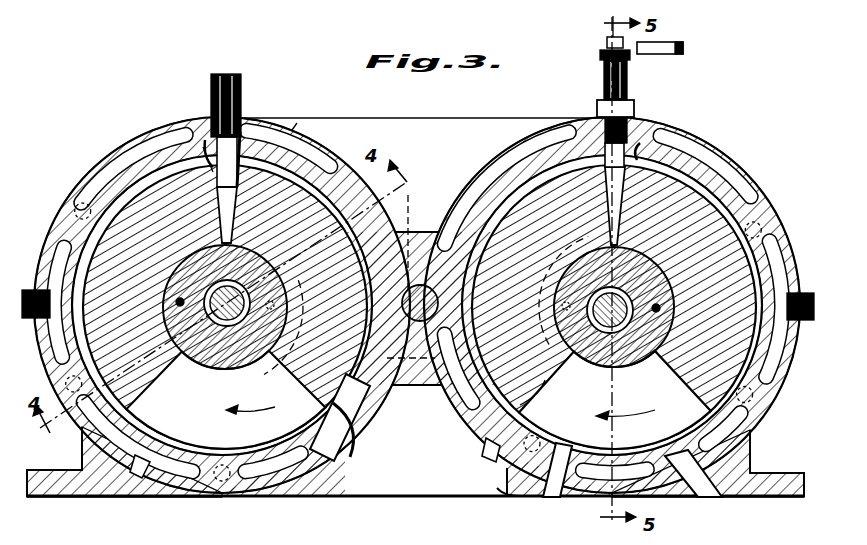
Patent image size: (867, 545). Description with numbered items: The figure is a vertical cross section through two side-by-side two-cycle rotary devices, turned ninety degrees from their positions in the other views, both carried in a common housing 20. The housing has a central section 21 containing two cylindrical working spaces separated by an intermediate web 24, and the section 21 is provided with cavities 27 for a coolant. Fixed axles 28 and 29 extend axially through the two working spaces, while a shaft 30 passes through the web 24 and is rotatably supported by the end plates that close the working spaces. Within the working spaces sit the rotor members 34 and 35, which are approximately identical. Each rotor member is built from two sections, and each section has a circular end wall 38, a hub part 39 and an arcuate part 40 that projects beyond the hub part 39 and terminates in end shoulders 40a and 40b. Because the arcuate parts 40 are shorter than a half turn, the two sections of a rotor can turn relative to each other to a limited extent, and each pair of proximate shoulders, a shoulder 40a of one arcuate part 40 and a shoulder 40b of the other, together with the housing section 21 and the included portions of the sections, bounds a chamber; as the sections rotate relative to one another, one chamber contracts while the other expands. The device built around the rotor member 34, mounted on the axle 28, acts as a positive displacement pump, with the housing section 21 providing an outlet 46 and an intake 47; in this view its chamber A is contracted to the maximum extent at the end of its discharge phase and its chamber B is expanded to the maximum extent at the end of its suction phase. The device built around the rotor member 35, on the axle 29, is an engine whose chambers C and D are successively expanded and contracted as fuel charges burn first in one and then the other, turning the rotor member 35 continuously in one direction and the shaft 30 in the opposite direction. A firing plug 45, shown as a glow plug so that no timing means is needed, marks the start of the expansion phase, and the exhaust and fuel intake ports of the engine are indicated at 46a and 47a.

The housing 20 is at (488, 134).
The central section 21 is at (60, 373).
The intermediate web 24 is at (401, 178).
The cavities 27 is at (63, 273).
The axle 28 is at (240, 352).
The axle 29 is at (640, 352).
The shaft 30 is at (418, 287).
The rotor member 34 is at (345, 452).
The rotor member 35 is at (541, 400).
The circular end wall 38 is at (553, 498).
The hub part 39 is at (597, 352).
The arcuate part 40 is at (140, 217).
The end shoulder 40a is at (297, 123).
The end shoulder 40b is at (203, 147).
The firing plug 45 is at (627, 81).
The outlet 46 is at (240, 80).
The exhaust port 46a is at (700, 487).
The intake 47 is at (367, 418).
The fuel intake port 47a is at (537, 499).
The chamber A is at (238, 170).
The chamber B is at (133, 467).
The chamber C is at (637, 153).
The chamber D is at (488, 443).